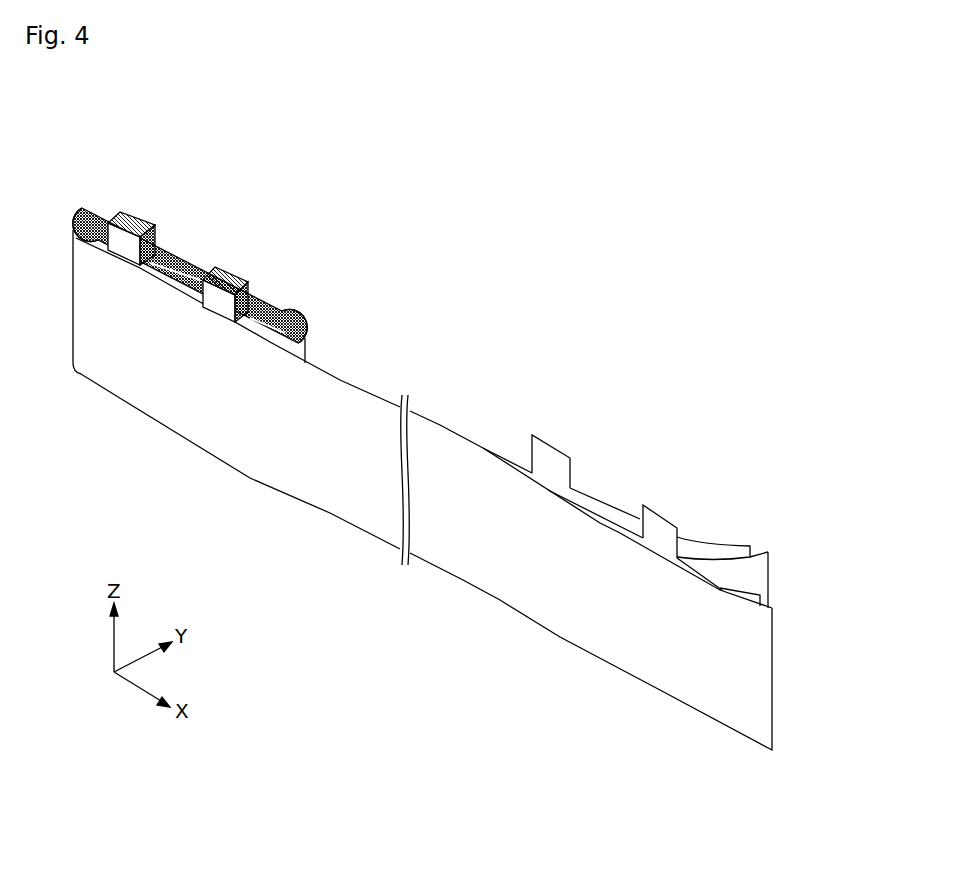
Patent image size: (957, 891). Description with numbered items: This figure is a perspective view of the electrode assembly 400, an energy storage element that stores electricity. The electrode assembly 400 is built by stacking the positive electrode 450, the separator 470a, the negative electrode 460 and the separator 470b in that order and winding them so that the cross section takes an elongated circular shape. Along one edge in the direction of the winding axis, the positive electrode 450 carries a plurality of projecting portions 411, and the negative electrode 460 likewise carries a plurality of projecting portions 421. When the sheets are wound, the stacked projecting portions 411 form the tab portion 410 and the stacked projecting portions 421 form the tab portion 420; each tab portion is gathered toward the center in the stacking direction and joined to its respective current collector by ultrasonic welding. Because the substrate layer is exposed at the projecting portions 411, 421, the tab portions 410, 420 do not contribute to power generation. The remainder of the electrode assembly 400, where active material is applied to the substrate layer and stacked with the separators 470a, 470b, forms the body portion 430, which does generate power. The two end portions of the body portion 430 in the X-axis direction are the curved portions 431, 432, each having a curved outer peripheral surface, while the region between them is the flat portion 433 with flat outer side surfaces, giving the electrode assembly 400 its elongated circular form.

The electrode assembly 400 is at (612, 256).
The tab portion 410 is at (148, 226).
The projecting portions 411 is at (550, 440).
The tab portion 420 is at (237, 278).
The projecting portions 421 is at (657, 510).
The body portion 430 is at (87, 286).
The curved portion 431 is at (75, 210).
The curved portion 432 is at (308, 338).
The flat portion 433 is at (190, 250).
The positive electrode 450 is at (598, 500).
The negative electrode 460 is at (694, 567).
The separator 470a is at (767, 553).
The separator 470b is at (720, 587).